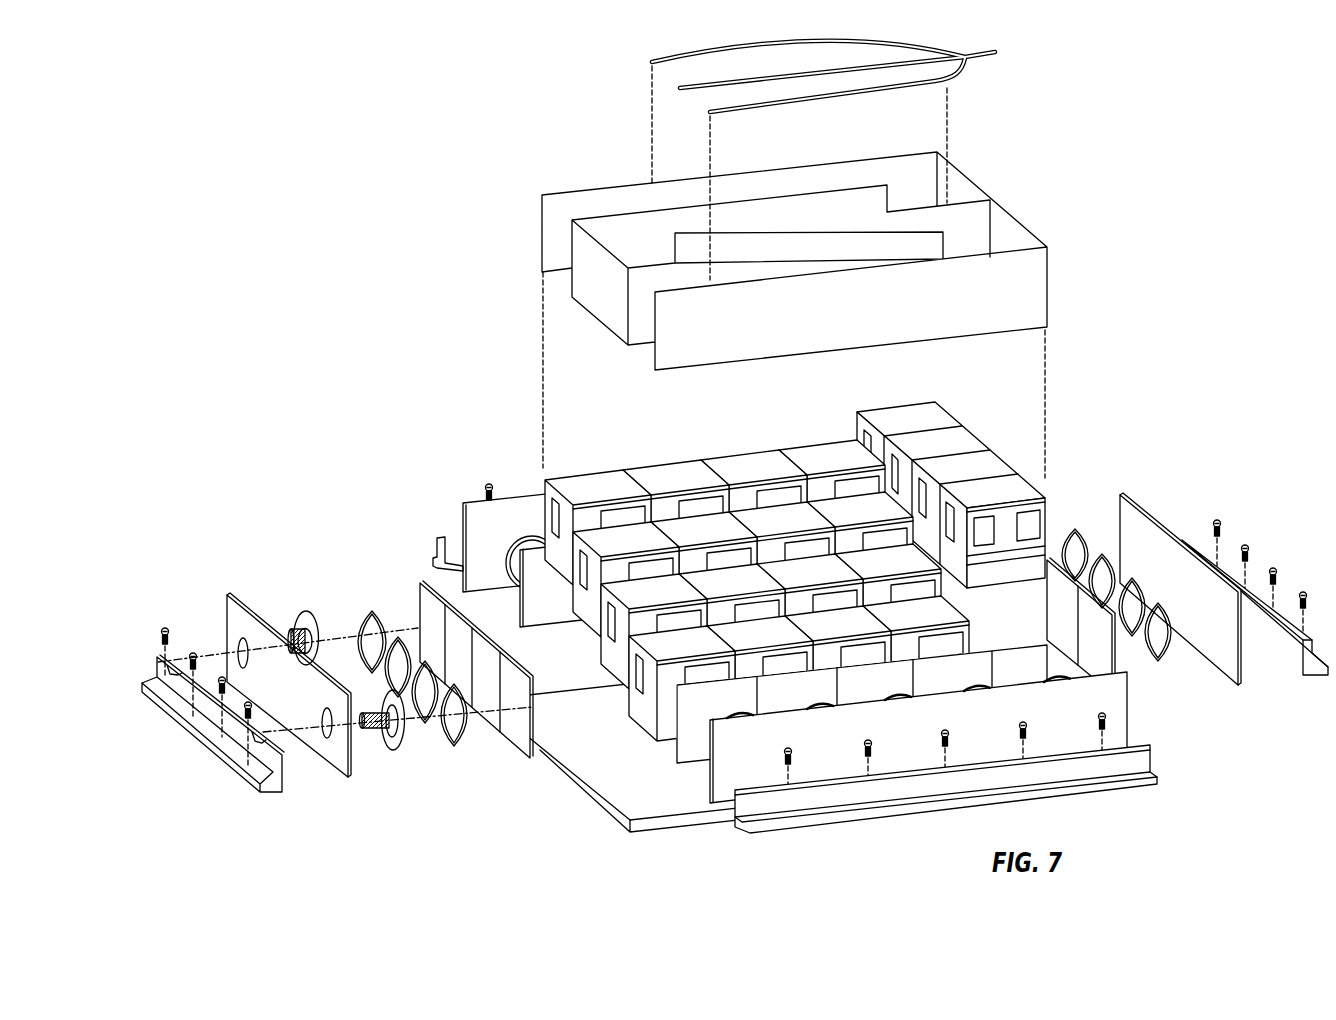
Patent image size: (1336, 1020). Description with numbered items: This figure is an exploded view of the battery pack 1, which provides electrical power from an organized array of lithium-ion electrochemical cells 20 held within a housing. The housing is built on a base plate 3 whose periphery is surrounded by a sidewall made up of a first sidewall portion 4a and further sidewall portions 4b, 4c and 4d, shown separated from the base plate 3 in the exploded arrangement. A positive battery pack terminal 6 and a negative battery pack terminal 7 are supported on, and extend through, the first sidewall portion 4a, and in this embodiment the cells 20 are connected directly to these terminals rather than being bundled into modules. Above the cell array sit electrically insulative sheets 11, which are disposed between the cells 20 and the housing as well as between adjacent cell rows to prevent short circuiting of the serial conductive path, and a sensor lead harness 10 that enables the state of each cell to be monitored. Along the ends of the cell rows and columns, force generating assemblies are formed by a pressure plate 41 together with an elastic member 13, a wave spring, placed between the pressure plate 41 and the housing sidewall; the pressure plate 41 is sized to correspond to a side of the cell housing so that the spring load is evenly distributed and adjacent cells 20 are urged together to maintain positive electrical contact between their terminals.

The battery pack 1 is at (455, 82).
The base plate 3 is at (617, 797).
The first sidewall portion 4a is at (226, 600).
The sidewall portion 4b is at (1113, 722).
The sidewall portion 4c is at (1158, 525).
The sidewall portion 4d is at (516, 498).
The positive battery pack terminal 6 is at (294, 630).
The negative battery pack terminal 7 is at (384, 740).
The sensor lead harness 10 is at (968, 70).
The electrically insulative sheet 11 is at (597, 300).
The elastic member 13 is at (512, 552).
The electrochemical cell 20 is at (650, 466).
The pressure plate 41 is at (423, 610).